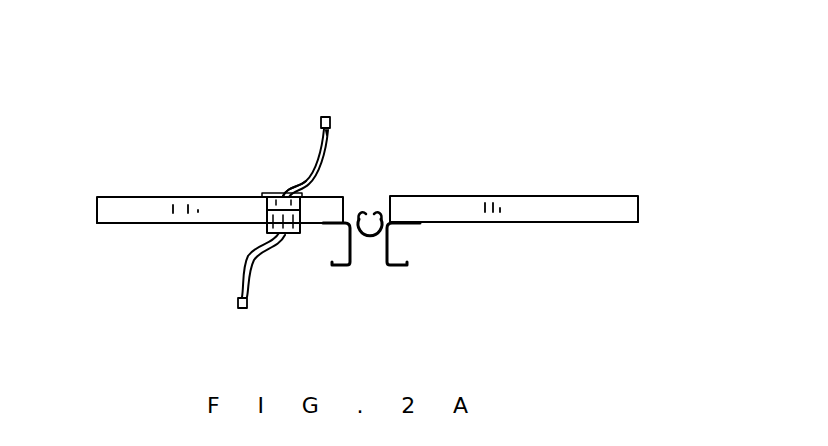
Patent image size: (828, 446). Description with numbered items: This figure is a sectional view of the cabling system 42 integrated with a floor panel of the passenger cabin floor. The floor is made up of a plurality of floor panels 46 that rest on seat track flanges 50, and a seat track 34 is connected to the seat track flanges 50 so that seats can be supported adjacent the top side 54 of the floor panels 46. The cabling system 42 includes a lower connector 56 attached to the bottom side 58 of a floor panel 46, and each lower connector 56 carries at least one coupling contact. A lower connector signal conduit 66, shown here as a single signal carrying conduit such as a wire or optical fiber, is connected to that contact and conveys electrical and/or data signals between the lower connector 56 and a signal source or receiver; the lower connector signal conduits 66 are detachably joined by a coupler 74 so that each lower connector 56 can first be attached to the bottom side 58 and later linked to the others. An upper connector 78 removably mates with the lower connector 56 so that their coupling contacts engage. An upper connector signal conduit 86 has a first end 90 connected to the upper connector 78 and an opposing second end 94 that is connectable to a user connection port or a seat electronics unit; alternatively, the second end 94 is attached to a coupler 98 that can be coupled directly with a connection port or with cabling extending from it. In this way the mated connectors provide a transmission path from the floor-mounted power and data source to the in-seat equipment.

The seat track 34 is at (368, 240).
The cabling system 42 is at (203, 142).
The floor panel 46 is at (132, 208).
The seat track flange 50 is at (345, 264).
The top side 54 is at (177, 198).
The lower connector 56 is at (272, 222).
The bottom side 58 is at (118, 223).
The lower connector signal conduit 66 is at (245, 277).
The coupler 74 is at (243, 308).
The upper connector 78 is at (262, 195).
The upper connector signal conduit 86 is at (307, 184).
The first end 90 is at (300, 192).
The second end 94 is at (332, 132).
The coupler 98 is at (330, 123).